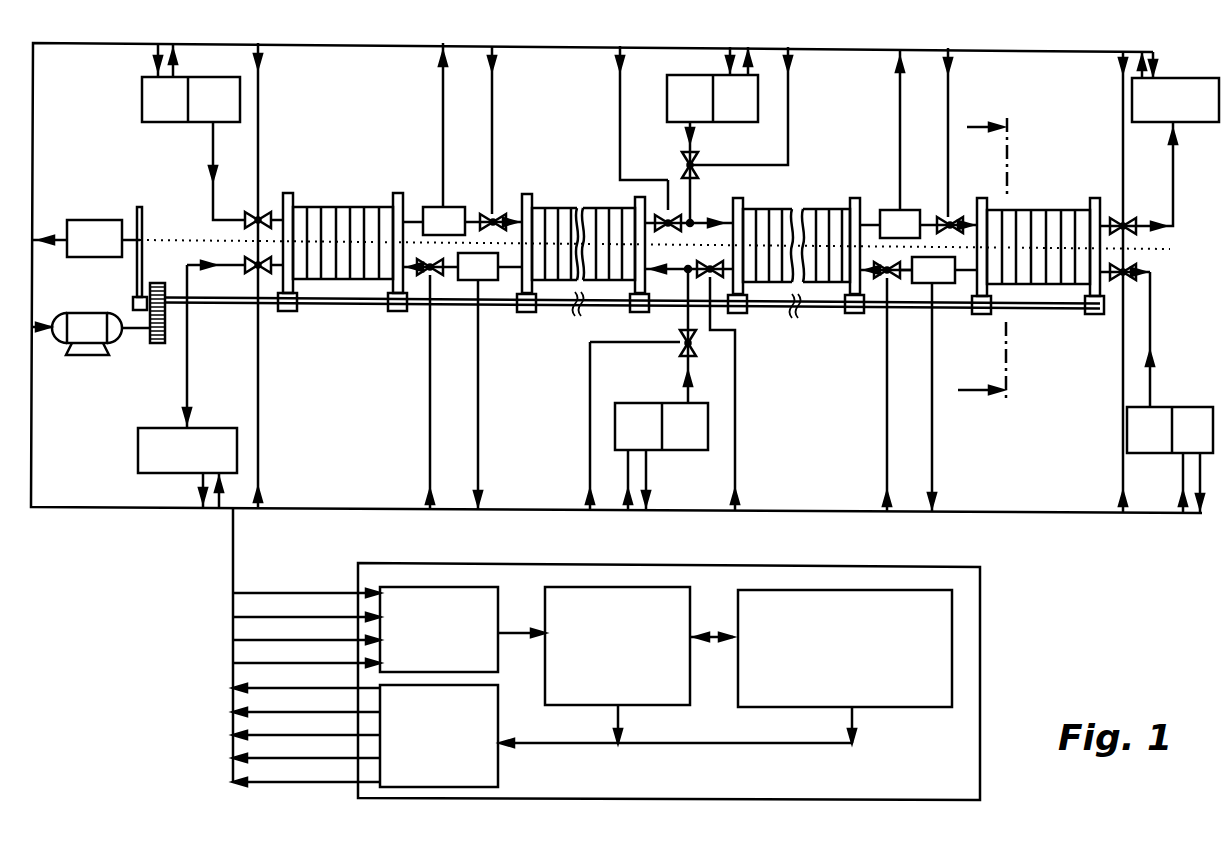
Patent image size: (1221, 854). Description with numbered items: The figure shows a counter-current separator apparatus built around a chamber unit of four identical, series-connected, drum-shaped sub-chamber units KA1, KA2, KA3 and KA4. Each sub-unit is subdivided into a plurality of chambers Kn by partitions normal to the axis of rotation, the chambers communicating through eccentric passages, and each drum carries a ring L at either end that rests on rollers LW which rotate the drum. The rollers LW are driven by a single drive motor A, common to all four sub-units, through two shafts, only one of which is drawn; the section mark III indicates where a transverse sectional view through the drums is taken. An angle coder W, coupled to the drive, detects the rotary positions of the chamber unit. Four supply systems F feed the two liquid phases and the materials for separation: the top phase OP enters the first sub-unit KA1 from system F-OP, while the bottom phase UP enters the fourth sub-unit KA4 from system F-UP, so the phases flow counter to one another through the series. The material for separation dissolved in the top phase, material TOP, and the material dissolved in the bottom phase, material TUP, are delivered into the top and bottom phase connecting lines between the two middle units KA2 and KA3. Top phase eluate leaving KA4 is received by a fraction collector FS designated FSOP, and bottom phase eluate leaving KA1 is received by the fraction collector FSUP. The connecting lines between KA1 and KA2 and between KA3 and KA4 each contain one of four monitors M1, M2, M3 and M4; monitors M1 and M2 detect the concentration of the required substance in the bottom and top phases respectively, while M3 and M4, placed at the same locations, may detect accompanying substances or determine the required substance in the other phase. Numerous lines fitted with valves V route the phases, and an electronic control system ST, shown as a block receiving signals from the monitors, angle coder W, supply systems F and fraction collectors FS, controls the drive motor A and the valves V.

The first sub-chamber unit KA1 is at (373, 201).
The second sub-chamber unit KA2 is at (589, 204).
The third sub-chamber unit KA3 is at (824, 206).
The fourth sub-chamber unit KA4 is at (1057, 209).
The ring L is at (288, 192).
The chambers Kn is at (328, 216).
The rollers LW is at (288, 311).
The valves V is at (254, 214).
The first monitor M1 is at (482, 381).
The second monitor M2 is at (898, 145).
The third monitor M3 is at (441, 140).
The fourth monitor M4 is at (938, 383).
The angle coder W is at (86, 238).
The drive motor A is at (86, 323).
The supply system F is at (678, 265).
The top phase OP is at (191, 82).
The material dissolved in the top phase TOP is at (712, 84).
The material dissolved in the bottom phase TUP is at (661, 456).
The fraction collector FS is at (678, 279).
The bottom phase UP is at (1170, 392).
The section line III is at (986, 260).
The electronic control system ST is at (980, 637).